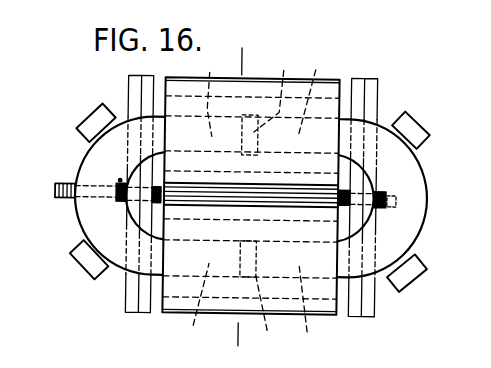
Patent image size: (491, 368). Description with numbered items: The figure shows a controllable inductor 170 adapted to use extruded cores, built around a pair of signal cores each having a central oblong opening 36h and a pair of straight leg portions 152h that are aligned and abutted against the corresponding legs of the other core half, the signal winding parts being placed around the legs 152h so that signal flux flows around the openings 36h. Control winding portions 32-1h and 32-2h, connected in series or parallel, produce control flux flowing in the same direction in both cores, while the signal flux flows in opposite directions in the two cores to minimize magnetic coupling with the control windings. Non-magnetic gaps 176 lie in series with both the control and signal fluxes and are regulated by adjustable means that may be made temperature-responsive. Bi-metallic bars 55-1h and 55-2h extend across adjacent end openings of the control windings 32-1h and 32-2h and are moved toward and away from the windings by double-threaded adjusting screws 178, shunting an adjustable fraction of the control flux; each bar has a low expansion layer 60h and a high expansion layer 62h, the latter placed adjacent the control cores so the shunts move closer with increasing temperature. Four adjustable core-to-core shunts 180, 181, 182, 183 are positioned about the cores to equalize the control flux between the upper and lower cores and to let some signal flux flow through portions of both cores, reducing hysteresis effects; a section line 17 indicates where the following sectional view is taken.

The section line 17— 17 is at (231, 58).
The control winding portion 32-1h is at (172, 102).
The control winding portion 32-2h is at (339, 316).
The central oblong opening 36h is at (119, 181).
The bi-metallic bar 55-1h is at (392, 96).
The bi-metallic bar 55-2h is at (116, 291).
The low expansion bi-metallic layer 60h is at (134, 77).
The high expansion bi-metallic layer 62h is at (146, 78).
The straight leg portion 152h is at (252, 200).
The controllable inductor 170 is at (471, 256).
The non-magnetic gap 176 is at (267, 199).
The double-threaded adjusting screw 178 is at (62, 200).
The adjustable core-to-core shunt 180 is at (97, 116).
The adjustable core-to-core shunt 181 is at (82, 255).
The adjustable core-to-core shunt 182 is at (414, 122).
The adjustable core-to-core shunt 183 is at (399, 278).